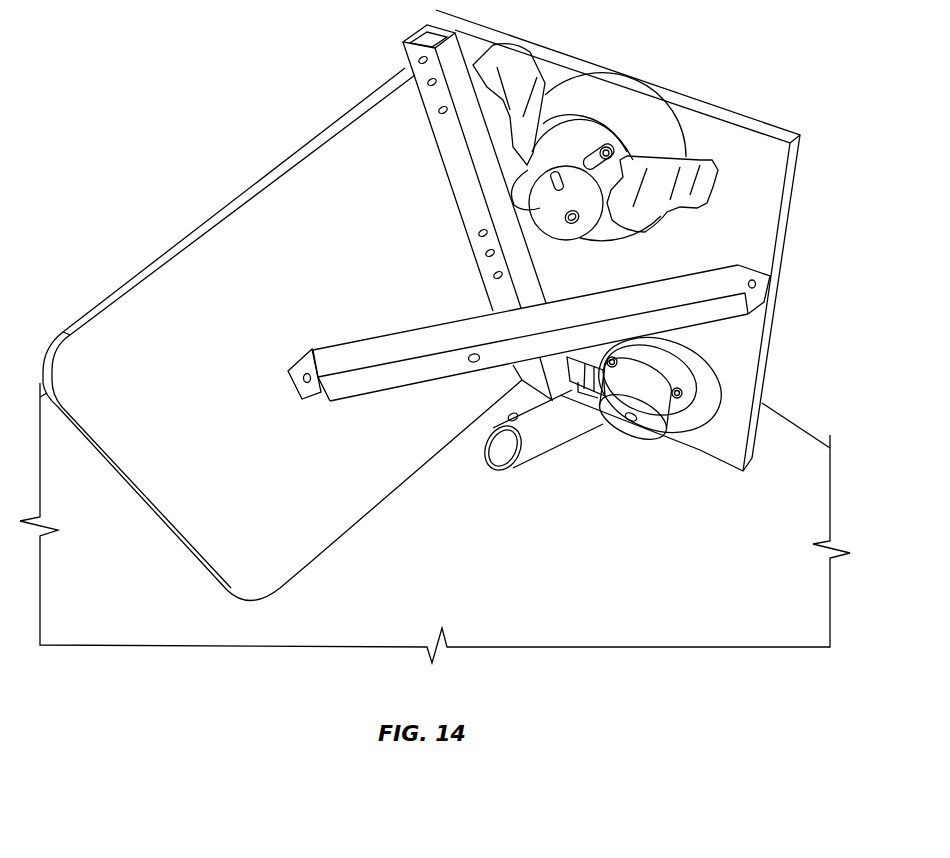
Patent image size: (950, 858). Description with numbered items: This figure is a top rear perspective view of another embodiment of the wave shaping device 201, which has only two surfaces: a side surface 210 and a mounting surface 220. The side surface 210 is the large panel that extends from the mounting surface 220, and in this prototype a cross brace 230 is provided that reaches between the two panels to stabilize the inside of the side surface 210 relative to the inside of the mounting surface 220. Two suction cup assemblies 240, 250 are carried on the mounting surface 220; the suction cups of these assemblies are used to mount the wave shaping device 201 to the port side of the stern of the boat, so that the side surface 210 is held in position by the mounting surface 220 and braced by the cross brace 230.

The wave shaping device 201 is at (623, 618).
The side surface 210 is at (283, 270).
The mounting surface 220 is at (760, 180).
The cross brace 230 is at (468, 332).
The suction cup assembly 240 is at (574, 187).
The suction cup assembly 250 is at (660, 407).